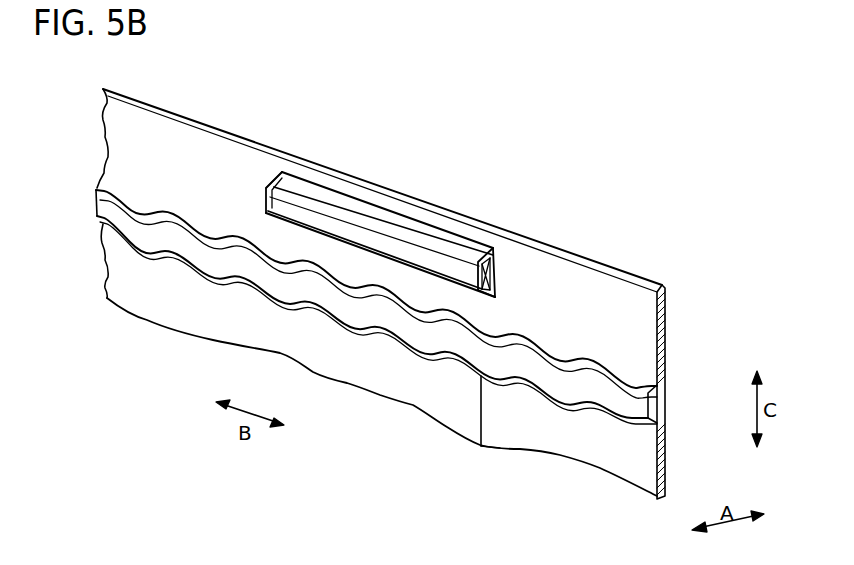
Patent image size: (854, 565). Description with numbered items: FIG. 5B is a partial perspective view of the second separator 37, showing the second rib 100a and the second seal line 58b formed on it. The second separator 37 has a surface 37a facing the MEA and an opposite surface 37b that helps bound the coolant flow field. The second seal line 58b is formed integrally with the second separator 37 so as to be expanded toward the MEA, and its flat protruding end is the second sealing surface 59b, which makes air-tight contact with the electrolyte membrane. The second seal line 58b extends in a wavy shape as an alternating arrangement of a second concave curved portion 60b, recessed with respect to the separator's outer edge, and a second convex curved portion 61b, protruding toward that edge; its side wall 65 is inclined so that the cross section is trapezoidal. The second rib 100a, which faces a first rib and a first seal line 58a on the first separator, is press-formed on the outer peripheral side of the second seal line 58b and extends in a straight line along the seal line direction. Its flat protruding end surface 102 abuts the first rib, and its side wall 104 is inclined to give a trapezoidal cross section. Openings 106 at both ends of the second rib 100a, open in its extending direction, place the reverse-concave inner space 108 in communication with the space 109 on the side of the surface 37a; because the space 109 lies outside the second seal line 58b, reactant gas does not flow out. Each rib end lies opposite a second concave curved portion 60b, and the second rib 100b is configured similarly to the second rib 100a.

The second separator 37 is at (443, 402).
The surface of the second separator facing the MEA 37a is at (643, 328).
The surface of the second separator opposing the first separator 37b is at (637, 313).
The first seal line 58a is at (376, 199).
The second seal line 58b is at (377, 381).
The second sealing surface 59b is at (554, 465).
The second concave curved portion 60b is at (481, 446).
The second convex curved portion 61b is at (595, 397).
The side wall of the second seal line 65 is at (663, 413).
The second rib 100a is at (198, 173).
The second rib 100b is at (274, 180).
The protruding end surface of the second rib 102 is at (338, 209).
The side wall of the second rib 104 is at (496, 281).
The opening 106 is at (274, 202).
The inner space 108 is at (413, 253).
The space 109 is at (555, 292).